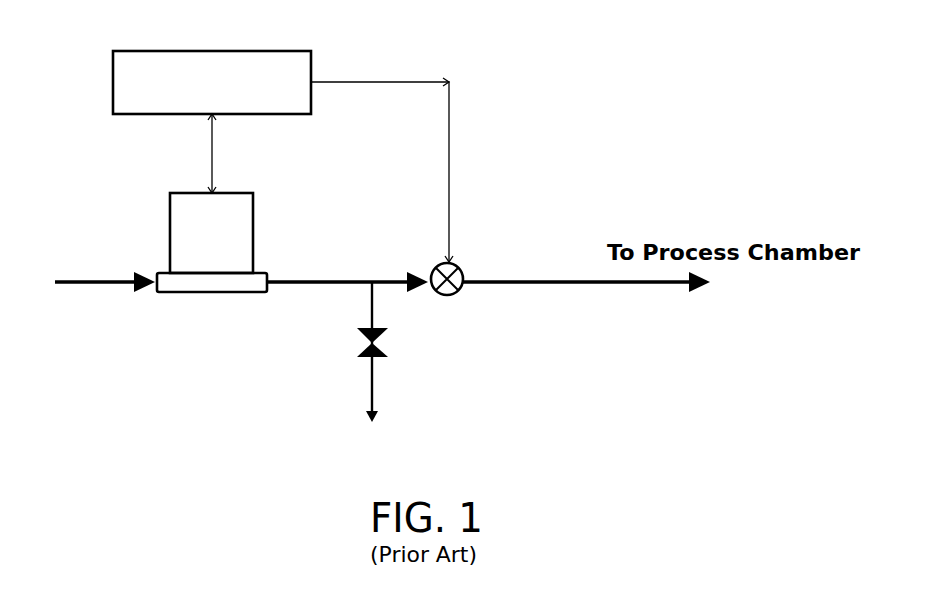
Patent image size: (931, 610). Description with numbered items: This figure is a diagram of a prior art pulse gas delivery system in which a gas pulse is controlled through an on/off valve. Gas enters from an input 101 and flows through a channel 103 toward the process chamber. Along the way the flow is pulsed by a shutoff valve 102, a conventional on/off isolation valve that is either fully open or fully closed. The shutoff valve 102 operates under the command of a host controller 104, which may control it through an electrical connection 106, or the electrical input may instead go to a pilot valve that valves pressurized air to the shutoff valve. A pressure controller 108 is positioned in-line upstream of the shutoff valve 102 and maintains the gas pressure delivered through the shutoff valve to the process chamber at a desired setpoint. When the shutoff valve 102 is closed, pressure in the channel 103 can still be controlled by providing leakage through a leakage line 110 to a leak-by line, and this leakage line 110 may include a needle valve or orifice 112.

The input 101 is at (95, 283).
The shutoff valve 102 is at (456, 292).
The channel 103 is at (300, 281).
The host controller 104 is at (311, 51).
The electrical connection 106 is at (450, 155).
The pressure controller 108 is at (254, 208).
The leakage line 110 is at (370, 382).
The needle valve or orifice 112 is at (390, 343).